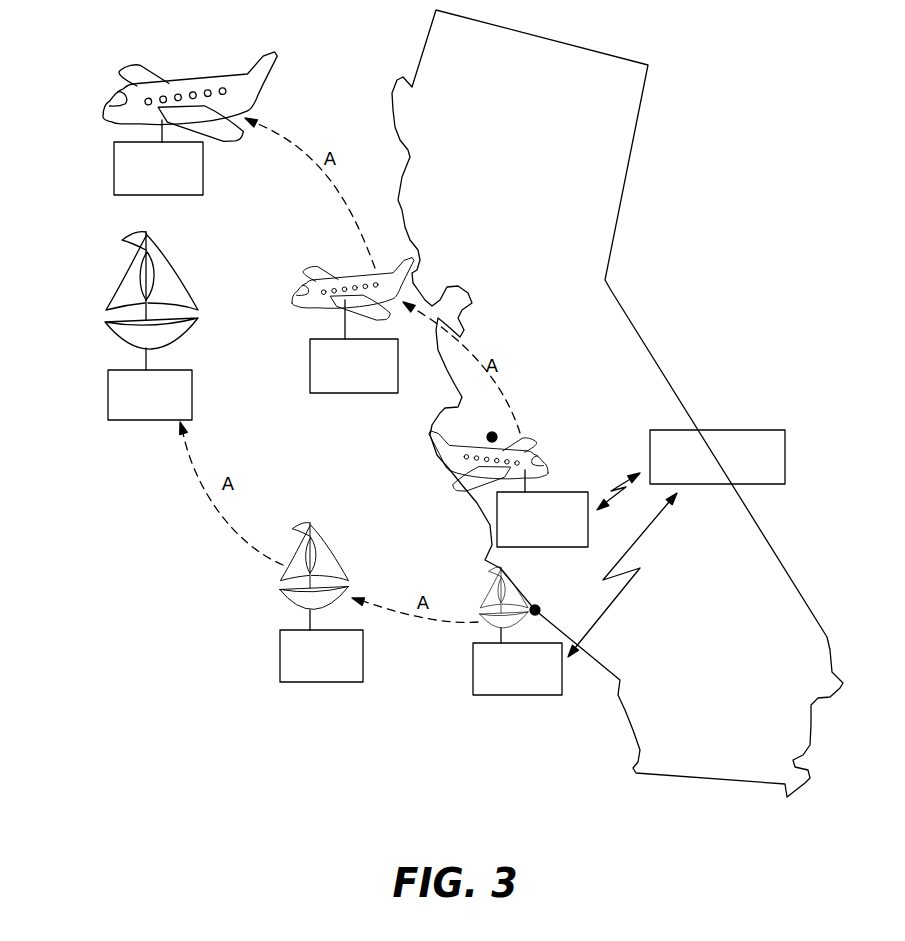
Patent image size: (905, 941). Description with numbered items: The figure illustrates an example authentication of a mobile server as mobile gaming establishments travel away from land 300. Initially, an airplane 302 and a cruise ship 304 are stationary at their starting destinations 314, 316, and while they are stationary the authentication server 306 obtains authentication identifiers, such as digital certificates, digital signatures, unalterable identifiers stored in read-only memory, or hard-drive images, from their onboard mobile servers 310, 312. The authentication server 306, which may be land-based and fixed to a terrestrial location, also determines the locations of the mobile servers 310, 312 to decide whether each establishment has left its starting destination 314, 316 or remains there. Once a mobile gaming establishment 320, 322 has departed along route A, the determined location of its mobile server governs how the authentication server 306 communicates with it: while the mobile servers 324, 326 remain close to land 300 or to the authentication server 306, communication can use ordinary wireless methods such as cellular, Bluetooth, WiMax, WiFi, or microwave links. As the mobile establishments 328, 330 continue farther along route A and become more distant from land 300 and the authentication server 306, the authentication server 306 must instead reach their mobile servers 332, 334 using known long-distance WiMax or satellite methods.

The land 300 is at (556, 297).
The airplane 302 is at (484, 600).
The cruise ship 304 is at (548, 459).
The authentication server 306 is at (720, 430).
The mobile server 310 is at (505, 695).
The mobile server 312 is at (573, 493).
The starting destination 314 is at (541, 607).
The starting destination 316 is at (498, 435).
The mobile gaming establishment 320 is at (327, 534).
The mobile gaming establishment 322 is at (346, 281).
The mobile server 324 is at (328, 393).
The mobile server 326 is at (304, 682).
The mobile establishment 328 is at (220, 73).
The mobile establishment 330 is at (117, 286).
The mobile server 332 is at (114, 157).
The mobile server 334 is at (118, 420).